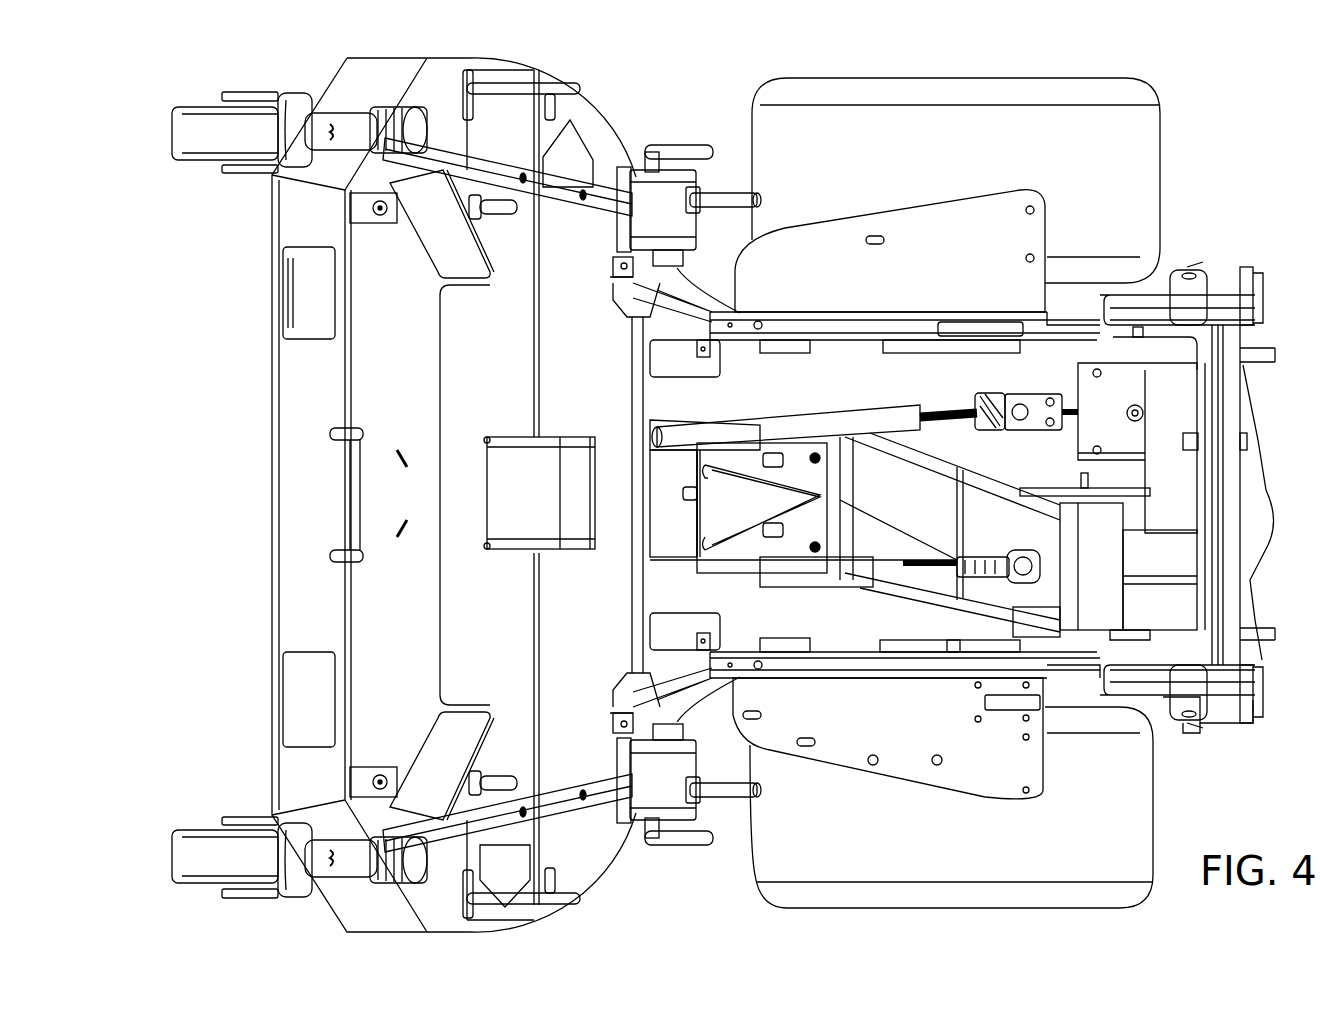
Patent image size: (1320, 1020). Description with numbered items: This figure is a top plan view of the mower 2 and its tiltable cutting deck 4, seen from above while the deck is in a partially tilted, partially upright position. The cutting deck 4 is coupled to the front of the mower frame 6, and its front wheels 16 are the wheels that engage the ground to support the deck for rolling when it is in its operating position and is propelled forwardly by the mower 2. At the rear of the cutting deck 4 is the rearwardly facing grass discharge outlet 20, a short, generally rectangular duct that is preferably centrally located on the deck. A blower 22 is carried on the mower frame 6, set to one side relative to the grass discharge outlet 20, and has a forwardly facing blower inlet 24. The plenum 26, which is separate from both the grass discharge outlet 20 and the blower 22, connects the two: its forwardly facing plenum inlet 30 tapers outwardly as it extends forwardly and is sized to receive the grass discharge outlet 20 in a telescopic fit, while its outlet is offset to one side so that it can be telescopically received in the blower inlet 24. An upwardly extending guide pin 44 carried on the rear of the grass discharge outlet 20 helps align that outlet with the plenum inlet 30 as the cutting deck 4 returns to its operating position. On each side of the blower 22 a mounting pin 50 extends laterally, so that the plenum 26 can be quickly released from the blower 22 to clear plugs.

The mower 2 is at (992, 493).
The cutting deck 4 is at (394, 495).
The mower frame 6 is at (1143, 305).
The front wheels 16 is at (167, 148).
The grass discharge outlet 20 is at (662, 522).
The blower 22 is at (1153, 560).
The blower inlet 24 is at (1095, 540).
The plenum 26 is at (935, 517).
The plenum inlet 30 is at (770, 408).
The guide pin 44 is at (686, 493).
The mounting pin 50 is at (1085, 478).